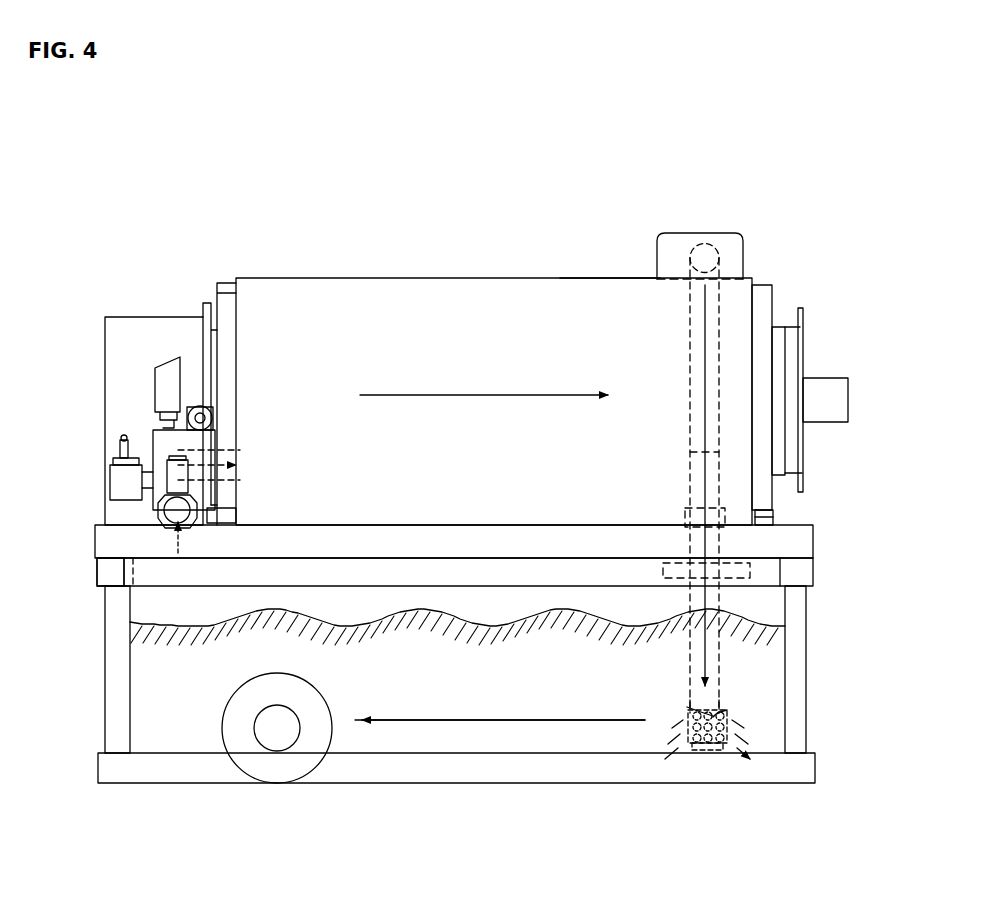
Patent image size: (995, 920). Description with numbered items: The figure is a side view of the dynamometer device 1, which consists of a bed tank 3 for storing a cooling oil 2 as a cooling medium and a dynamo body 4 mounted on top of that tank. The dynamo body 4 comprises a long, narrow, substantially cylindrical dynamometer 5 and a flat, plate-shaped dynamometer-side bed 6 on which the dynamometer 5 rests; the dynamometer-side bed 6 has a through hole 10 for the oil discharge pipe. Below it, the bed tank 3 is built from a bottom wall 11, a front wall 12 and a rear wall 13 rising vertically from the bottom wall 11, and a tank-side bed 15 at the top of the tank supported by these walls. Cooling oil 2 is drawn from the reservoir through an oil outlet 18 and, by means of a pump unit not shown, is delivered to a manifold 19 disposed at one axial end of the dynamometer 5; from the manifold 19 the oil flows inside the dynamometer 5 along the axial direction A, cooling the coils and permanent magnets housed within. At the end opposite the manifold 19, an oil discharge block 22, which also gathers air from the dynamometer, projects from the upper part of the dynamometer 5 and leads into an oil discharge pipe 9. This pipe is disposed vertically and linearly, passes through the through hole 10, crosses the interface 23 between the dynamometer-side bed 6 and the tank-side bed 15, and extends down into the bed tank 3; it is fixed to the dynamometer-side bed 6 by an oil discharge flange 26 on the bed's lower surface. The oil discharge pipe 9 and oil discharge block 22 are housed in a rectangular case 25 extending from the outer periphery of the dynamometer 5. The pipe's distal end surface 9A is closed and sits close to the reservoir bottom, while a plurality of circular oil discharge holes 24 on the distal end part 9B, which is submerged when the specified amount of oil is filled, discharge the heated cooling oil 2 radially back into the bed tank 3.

The dynamometer device 1 is at (154, 368).
The cooling oil 2 is at (775, 649).
The bed tank 3 is at (743, 838).
The dynamo body 4 is at (604, 233).
The dynamometer 5 is at (375, 277).
The dynamometer-side bed 6 is at (797, 545).
The oil discharge pipe 9 is at (727, 677).
The distal end surface 9A is at (700, 750).
The distal end part 9B is at (728, 702).
The through hole for oil discharge pipe 10 is at (727, 543).
The bottom wall 11 is at (553, 783).
The front wall 12 is at (798, 737).
The rear wall 13 is at (117, 692).
The tank-side bed 15 is at (798, 575).
The oil outlet 18 is at (282, 770).
The manifold 19 is at (158, 492).
The oil discharge block 22 is at (716, 250).
The interface 23 is at (120, 560).
The oil discharge holes 24 is at (687, 707).
The case 25 is at (677, 233).
The oil discharge flange 26 is at (752, 572).
The axial direction A is at (462, 395).